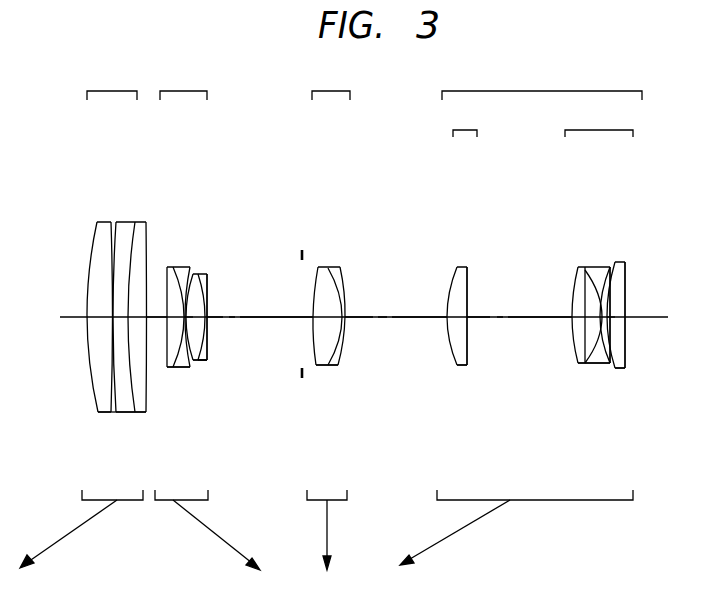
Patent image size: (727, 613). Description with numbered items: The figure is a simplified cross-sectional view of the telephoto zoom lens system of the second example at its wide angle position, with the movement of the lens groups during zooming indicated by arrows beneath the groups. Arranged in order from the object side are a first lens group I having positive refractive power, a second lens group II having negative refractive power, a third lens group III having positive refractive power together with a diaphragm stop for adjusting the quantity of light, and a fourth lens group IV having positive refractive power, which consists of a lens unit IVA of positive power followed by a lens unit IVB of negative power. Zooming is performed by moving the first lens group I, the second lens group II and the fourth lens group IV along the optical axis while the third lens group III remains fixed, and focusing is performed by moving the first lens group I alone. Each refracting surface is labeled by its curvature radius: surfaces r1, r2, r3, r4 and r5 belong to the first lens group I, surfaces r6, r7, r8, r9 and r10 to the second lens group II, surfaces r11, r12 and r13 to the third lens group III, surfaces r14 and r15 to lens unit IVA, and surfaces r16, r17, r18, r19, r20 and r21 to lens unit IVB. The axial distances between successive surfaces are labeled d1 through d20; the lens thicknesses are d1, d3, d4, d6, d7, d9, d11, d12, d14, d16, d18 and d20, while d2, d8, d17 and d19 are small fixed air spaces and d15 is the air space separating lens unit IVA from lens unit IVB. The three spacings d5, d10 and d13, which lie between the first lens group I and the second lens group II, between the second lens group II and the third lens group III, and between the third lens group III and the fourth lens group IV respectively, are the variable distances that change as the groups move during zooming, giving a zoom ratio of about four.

The first lens group I is at (81, 316).
The second lens group II is at (207, 317).
The third lens group III is at (328, 317).
The fourth lens group IV is at (521, 314).
The lens unit IVA is at (465, 120).
The lens unit IVB is at (599, 120).
The curvature radius of lens surface 1 r1 is at (97, 222).
The curvature radius of lens surface 2 r2 is at (113, 227).
The curvature radius of lens surface 3 r3 is at (118, 222).
The curvature radius of lens surface 4 r4 is at (135, 223).
The curvature radius of lens surface 5 r5 is at (148, 228).
The curvature radius of lens surface 6 r6 is at (168, 265).
The curvature radius of lens surface 7 r7 is at (174, 267).
The curvature radius of lens surface 8 r8 is at (193, 274).
The curvature radius of lens surface 9 r9 is at (206, 273).
The curvature radius of lens surface 10 r10 is at (208, 282).
The curvature radius of lens surface 11 r11 is at (316, 267).
The curvature radius of lens surface 12 r12 is at (332, 267).
The curvature radius of lens surface 13 r13 is at (343, 280).
The curvature radius of lens surface 14 r14 is at (457, 267).
The curvature radius of lens surface 15 r15 is at (468, 283).
The curvature radius of lens surface 16 r16 is at (578, 266).
The curvature radius of lens surface 17 r17 is at (585, 267).
The curvature radius of lens surface 18 r18 is at (603, 267).
The curvature radius of lens surface 19 r19 is at (615, 262).
The curvature radius of lens surface 20 r20 is at (623, 260).
The curvature radius of lens surface 21 r21 is at (627, 272).
The distance between lens surfaces 1 and 2 d1 is at (100, 412).
The distance between lens surfaces 2 and 3 d2 is at (113, 412).
The distance between lens surfaces 3 and 4 d3 is at (128, 412).
The distance between lens surfaces 4 and 5 d4 is at (157, 318).
The distance between lens surfaces 5 and 6 d5 is at (167, 368).
The distance between lens surfaces 6 and 7 d6 is at (185, 367).
The distance between lens surfaces 7 and 8 d7 is at (202, 360).
The distance between lens surfaces 8 and 9 d8 is at (208, 363).
The distance between lens surfaces 9 and 10 d9 is at (210, 360).
The distance between lens surfaces 10 and 11 d10 is at (273, 318).
The distance between lens surfaces 11 and 12 d11 is at (325, 320).
The distance between lens surfaces 12 and 13 d12 is at (345, 320).
The distance between lens surfaces 13 and 14 d13 is at (405, 318).
The distance between lens surfaces 14 and 15 d14 is at (455, 365).
The distance between lens surfaces 15 and 16 d15 is at (527, 318).
The distance between lens surfaces 16 and 17 d16 is at (575, 363).
The distance between lens surfaces 17 and 18 d17 is at (590, 363).
The distance between lens surfaces 18 and 19 d18 is at (600, 363).
The distance between lens surfaces 19 and 20 d19 is at (620, 367).
The distance between lens surfaces 20 and 21 d20 is at (627, 353).